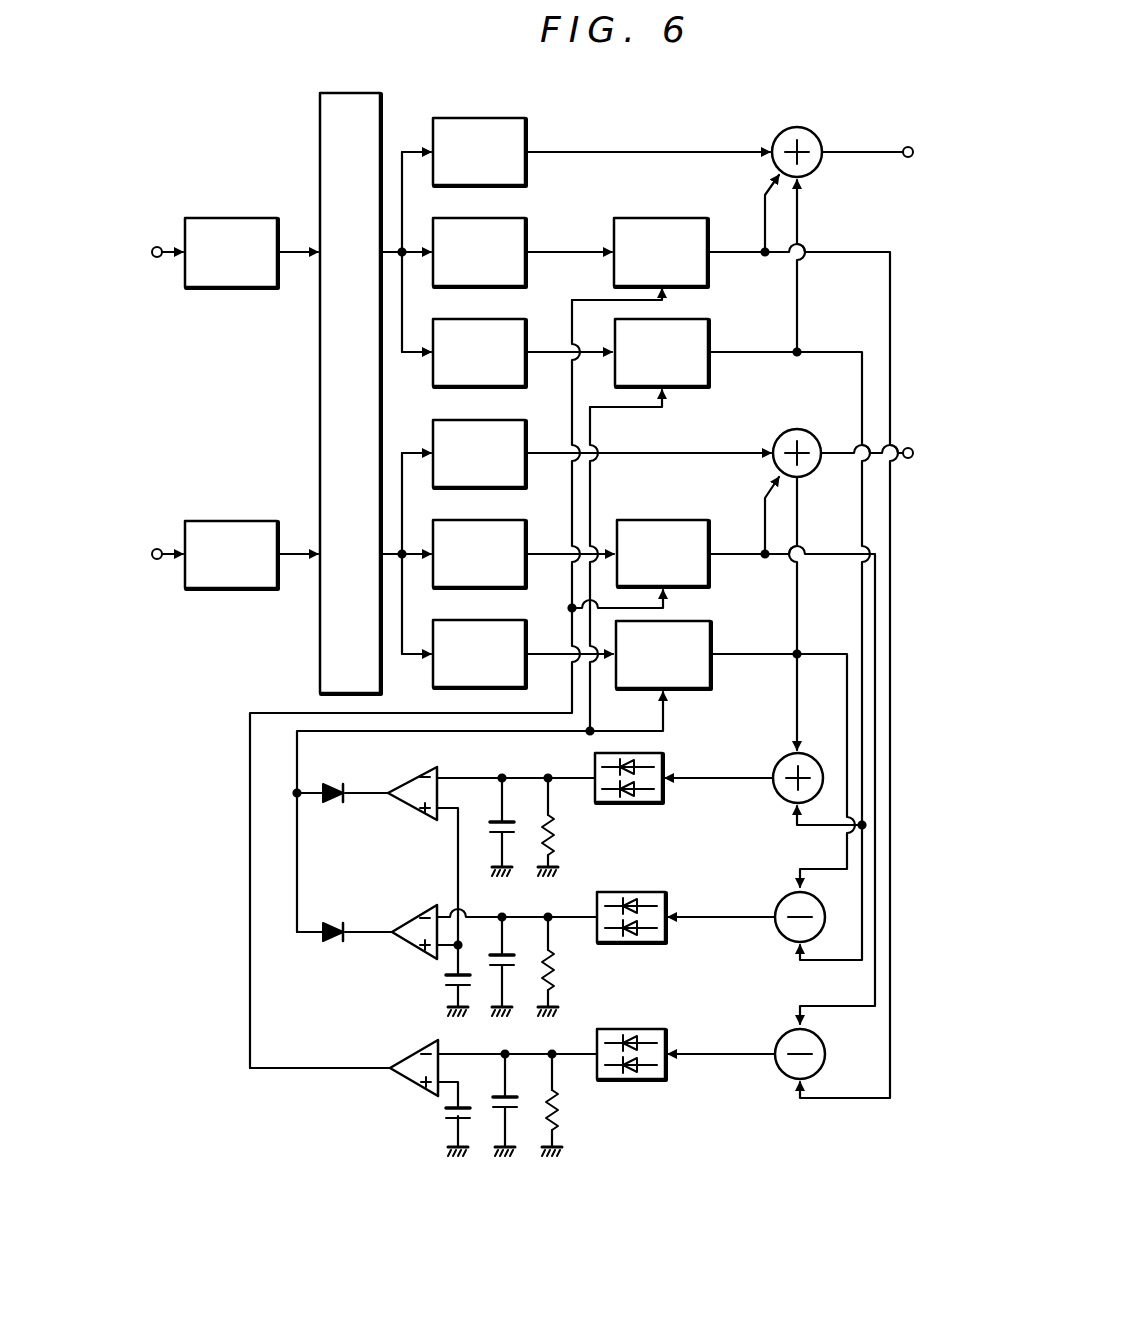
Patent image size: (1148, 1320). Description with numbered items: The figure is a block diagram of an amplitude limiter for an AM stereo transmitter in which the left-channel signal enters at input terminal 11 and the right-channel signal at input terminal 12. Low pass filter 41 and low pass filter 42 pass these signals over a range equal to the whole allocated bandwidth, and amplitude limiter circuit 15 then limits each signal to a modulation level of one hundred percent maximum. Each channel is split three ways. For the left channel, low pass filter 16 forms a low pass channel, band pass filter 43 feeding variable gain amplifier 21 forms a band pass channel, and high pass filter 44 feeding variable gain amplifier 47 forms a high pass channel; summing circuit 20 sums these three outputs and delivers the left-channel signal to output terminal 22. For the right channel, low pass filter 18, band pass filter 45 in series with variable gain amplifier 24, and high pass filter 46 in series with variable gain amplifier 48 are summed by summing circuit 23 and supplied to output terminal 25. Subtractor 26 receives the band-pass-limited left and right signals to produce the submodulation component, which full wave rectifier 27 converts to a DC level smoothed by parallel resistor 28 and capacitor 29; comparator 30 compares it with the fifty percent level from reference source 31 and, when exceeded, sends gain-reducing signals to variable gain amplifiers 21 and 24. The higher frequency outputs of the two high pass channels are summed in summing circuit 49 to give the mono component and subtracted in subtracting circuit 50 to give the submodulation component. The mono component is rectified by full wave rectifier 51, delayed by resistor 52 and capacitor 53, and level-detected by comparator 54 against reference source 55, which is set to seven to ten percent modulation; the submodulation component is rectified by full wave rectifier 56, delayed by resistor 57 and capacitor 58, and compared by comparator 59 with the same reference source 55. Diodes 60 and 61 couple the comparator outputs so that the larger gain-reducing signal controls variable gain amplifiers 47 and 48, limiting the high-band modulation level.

The input terminal 11 is at (173, 210).
The input terminal 12 is at (173, 516).
The amplitude limiter circuit 15 is at (374, 377).
The low pass filter 16 is at (503, 141).
The low pass filter 18 is at (503, 442).
The summing circuit 20 is at (816, 170).
The variable gain amplifier 21 is at (675, 229).
The output terminal 22 is at (867, 127).
The summing circuit 23 is at (815, 436).
The variable gain amplifier 24 is at (676, 535).
The output terminal 25 is at (877, 427).
The subtractor 26 is at (822, 1061).
The full wave rectifier 27 is at (661, 1081).
The resistor 28 is at (578, 1121).
The capacitor 29 is at (523, 1082).
The comparator 30 is at (391, 1059).
The reference source 31 is at (434, 1130).
The low pass filter 41 is at (238, 225).
The low pass filter 42 is at (239, 531).
The band pass filter 43 is at (502, 240).
The high pass filter 44 is at (501, 336).
The band pass filter 45 is at (502, 538).
The high pass filter 46 is at (503, 638).
The variable gain amplifier 47 is at (674, 378).
The variable gain amplifier 48 is at (676, 682).
The summing circuit 49 is at (808, 754).
The subtracting circuit 50 is at (820, 924).
The full wave rectifier 51 is at (658, 798).
The resistor 52 is at (571, 844).
The capacitor 53 is at (486, 847).
The comparator 54 is at (408, 812).
The reference source 55 is at (429, 983).
The full wave rectifier 56 is at (660, 939).
The resistor 57 is at (574, 978).
The capacitor 58 is at (520, 947).
The comparator 59 is at (408, 912).
The diode 60 is at (336, 821).
The diode 61 is at (335, 903).